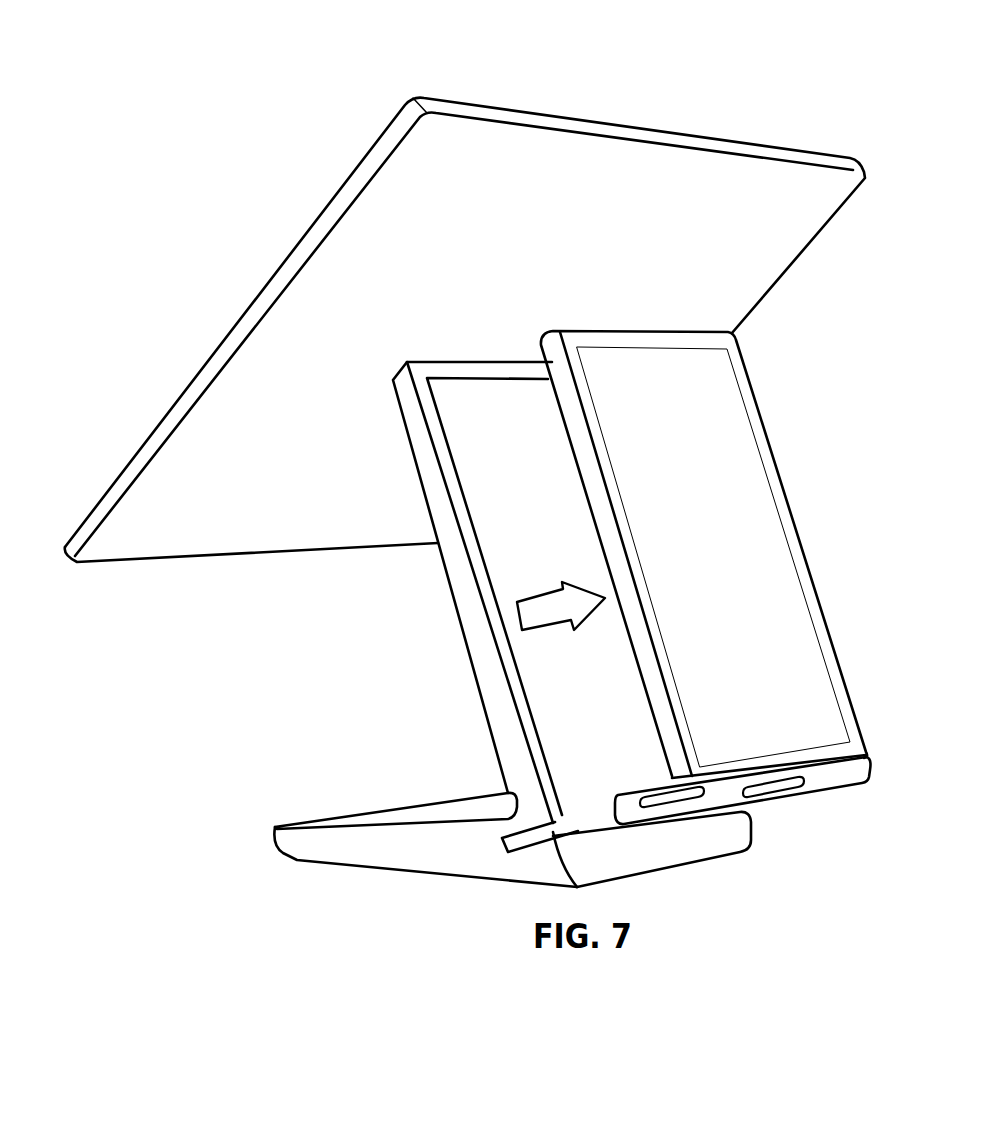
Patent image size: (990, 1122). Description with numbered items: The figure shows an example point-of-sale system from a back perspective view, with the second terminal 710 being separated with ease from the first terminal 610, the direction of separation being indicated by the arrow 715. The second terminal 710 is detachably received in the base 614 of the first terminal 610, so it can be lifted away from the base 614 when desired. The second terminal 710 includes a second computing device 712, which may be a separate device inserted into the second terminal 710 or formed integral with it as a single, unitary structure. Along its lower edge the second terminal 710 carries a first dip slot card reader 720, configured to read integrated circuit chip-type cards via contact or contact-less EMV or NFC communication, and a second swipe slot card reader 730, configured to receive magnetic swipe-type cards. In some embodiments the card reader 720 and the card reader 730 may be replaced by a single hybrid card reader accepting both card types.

The first terminal 610 is at (762, 143).
The base 614 is at (454, 597).
The second terminal 710 is at (772, 450).
The second computing device 712 is at (762, 562).
The arrow 715 is at (543, 628).
The dip slot card reader 720 is at (851, 781).
The swipe slot card reader 730 is at (858, 755).